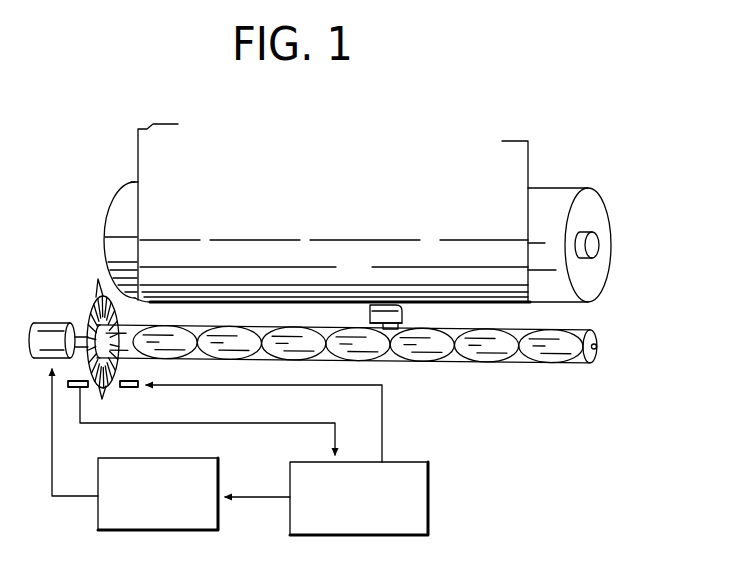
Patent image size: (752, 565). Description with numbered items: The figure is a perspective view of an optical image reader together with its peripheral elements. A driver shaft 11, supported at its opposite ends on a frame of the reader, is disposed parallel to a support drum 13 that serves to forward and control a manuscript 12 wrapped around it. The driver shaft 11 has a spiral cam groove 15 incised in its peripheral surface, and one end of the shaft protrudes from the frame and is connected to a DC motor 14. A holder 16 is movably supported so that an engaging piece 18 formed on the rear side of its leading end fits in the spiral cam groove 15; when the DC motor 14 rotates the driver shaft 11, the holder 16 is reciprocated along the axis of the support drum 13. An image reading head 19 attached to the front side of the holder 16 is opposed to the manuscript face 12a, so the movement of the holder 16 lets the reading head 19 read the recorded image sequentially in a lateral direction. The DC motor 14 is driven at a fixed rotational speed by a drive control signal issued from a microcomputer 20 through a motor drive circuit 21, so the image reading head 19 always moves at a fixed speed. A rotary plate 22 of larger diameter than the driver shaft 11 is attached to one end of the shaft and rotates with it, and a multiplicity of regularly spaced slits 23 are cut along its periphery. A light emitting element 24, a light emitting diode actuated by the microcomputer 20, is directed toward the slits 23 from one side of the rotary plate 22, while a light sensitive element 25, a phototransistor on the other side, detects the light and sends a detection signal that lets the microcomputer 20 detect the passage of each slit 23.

The driver shaft 11 is at (557, 361).
The manuscript 12 is at (519, 158).
The manuscript face 12a is at (372, 268).
The support drum 13 is at (573, 190).
The DC motor 14 is at (46, 330).
The spiral cam groove 15 is at (262, 361).
The holder 16 is at (398, 324).
The engaging piece 18 is at (393, 329).
The image reading head 19 is at (403, 308).
The microcomputer 20 is at (400, 463).
The motor drive circuit 21 is at (220, 474).
The rotary plate 22 is at (90, 314).
The slits 23 is at (99, 289).
The light emitting element 24 is at (133, 389).
The light sensitive element 25 is at (68, 383).